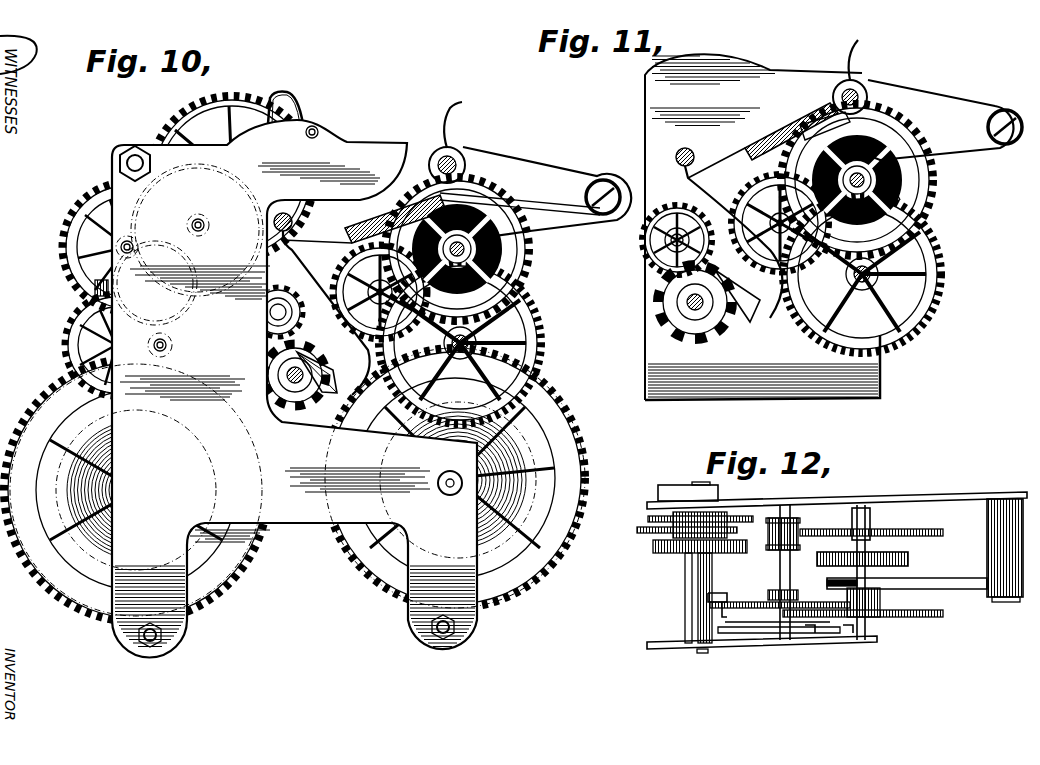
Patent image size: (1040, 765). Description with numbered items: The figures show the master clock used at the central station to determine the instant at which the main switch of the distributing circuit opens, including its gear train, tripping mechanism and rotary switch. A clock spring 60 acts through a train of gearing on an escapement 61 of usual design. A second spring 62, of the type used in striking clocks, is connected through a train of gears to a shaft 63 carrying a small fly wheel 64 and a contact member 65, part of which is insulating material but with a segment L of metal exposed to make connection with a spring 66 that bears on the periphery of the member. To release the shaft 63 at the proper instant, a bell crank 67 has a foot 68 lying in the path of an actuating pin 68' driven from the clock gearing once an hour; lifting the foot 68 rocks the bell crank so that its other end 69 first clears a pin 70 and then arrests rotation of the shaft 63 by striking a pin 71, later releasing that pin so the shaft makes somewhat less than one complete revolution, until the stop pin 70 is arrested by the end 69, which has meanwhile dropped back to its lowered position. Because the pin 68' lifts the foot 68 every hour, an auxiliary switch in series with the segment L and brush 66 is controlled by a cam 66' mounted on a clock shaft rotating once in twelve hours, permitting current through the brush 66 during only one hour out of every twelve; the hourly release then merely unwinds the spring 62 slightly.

In FIG. 10, the clock spring 60 is at (88, 518).
In FIG. 10, the escapement 61 is at (250, 100).
In FIG. 10, the second spring 62 is at (437, 440).
In FIG. 10, the shaft 63 is at (470, 248).
In FIG. 11, the shaft 63 is at (857, 180).
In FIG. 12, the shaft 63 is at (872, 630).
In FIG. 10, the fly wheel 64 is at (520, 282).
In FIG. 11, the fly wheel 64 is at (912, 222).
In FIG. 12, the fly wheel 64 is at (908, 557).
In FIG. 10, the contact member 65 is at (520, 209).
In FIG. 11, the contact member 65 is at (883, 147).
In FIG. 12, the contact member 65 is at (827, 584).
In FIG. 10, the spring 66 is at (547, 192).
In FIG. 11, the spring 66 is at (941, 137).
In FIG. 12, the spring 66 is at (907, 604).
In FIG. 12, the cam 66' is at (662, 481).
In FIG. 10, the bell crank 67 is at (303, 247).
In FIG. 10, the foot 68 is at (309, 412).
In FIG. 11, the foot 68 is at (754, 319).
In FIG. 10, the actuating pin 68' is at (276, 398).
In FIG. 11, the actuating pin 68' is at (706, 317).
In FIG. 12, the actuating pin 68' is at (733, 592).
In FIG. 10, the end of bell crank 69 is at (396, 218).
In FIG. 10, the pin 70 is at (470, 198).
In FIG. 11, the pin 70 is at (802, 152).
In FIG. 12, the pin 70 is at (812, 627).
In FIG. 10, the pin 71 is at (503, 202).
In FIG. 11, the pin 71 is at (863, 107).
In FIG. 12, the pin 71 is at (848, 630).
In FIG. 11, the segment L is at (920, 212).